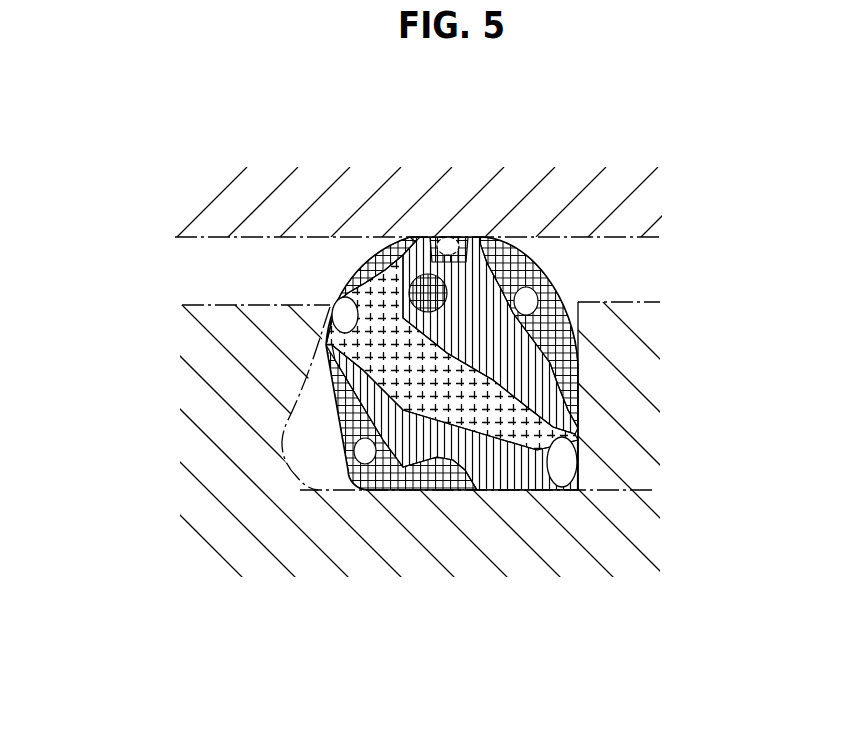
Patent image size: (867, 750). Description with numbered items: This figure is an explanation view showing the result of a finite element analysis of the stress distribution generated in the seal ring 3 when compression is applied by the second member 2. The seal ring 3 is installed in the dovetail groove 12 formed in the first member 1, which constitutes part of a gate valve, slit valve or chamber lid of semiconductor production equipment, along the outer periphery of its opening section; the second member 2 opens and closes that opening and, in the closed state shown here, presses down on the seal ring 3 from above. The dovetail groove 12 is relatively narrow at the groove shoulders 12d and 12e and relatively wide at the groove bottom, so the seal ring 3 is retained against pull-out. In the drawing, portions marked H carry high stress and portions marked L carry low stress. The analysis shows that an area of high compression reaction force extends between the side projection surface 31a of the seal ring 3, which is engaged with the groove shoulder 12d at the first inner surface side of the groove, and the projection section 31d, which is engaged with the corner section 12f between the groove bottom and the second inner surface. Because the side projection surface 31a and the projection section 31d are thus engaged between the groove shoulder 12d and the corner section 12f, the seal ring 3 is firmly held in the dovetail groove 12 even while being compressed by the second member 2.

The first member 1 is at (396, 540).
The second member 2 is at (362, 190).
The seal ring 3 is at (541, 257).
The dovetail groove 12 is at (318, 453).
The groove shoulder 12d is at (331, 305).
The groove shoulder 12e is at (588, 303).
The corner section 12f is at (582, 492).
The side projection surface 31a is at (335, 315).
The projection section 31d is at (580, 477).